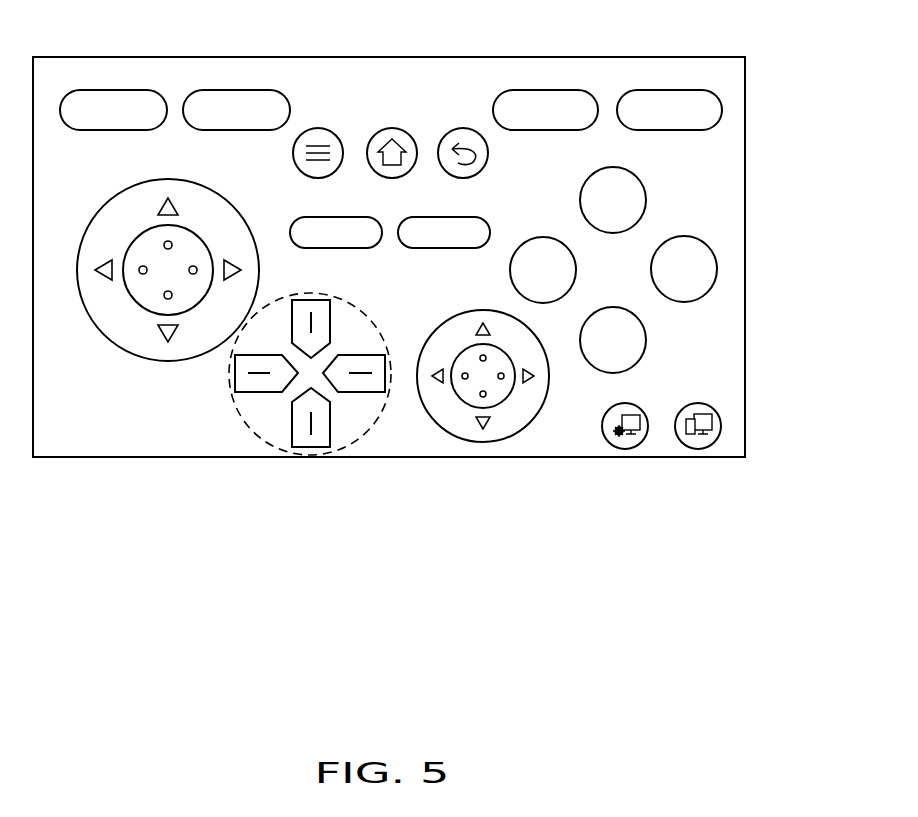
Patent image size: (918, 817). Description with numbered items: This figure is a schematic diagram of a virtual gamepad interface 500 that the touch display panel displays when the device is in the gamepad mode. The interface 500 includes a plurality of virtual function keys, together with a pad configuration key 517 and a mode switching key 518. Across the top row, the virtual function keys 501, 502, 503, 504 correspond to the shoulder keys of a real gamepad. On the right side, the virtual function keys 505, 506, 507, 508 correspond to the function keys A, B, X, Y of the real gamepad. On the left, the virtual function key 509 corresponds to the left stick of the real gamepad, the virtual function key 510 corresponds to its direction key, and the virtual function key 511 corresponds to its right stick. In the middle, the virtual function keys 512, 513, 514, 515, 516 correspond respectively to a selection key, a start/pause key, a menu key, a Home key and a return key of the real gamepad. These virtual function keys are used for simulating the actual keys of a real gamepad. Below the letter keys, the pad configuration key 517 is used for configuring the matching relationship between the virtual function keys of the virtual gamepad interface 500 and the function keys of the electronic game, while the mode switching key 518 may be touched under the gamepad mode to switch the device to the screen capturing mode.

The virtual gamepad interface 500 is at (705, 57).
The virtual function key 501 is at (113, 90).
The virtual function key 502 is at (238, 90).
The virtual function key 503 is at (545, 90).
The virtual function key 504 is at (670, 90).
The virtual function key 505 is at (600, 370).
The virtual function key 506 is at (686, 302).
The virtual function key 507 is at (510, 270).
The virtual function key 508 is at (643, 178).
The virtual function key 509 is at (125, 315).
The virtual function key 510 is at (252, 430).
The virtual function key 511 is at (523, 430).
The virtual function key 512 is at (347, 217).
The virtual function key 513 is at (445, 217).
The virtual function key 514 is at (320, 128).
The virtual function key 515 is at (395, 128).
The virtual function key 516 is at (463, 128).
The pad configuration key 517 is at (627, 449).
The mode switching key 518 is at (703, 449).